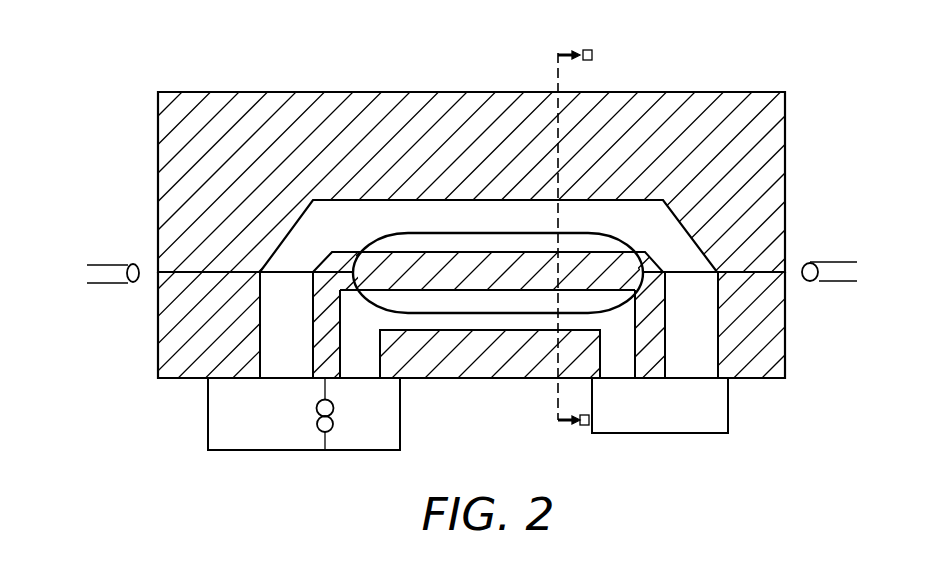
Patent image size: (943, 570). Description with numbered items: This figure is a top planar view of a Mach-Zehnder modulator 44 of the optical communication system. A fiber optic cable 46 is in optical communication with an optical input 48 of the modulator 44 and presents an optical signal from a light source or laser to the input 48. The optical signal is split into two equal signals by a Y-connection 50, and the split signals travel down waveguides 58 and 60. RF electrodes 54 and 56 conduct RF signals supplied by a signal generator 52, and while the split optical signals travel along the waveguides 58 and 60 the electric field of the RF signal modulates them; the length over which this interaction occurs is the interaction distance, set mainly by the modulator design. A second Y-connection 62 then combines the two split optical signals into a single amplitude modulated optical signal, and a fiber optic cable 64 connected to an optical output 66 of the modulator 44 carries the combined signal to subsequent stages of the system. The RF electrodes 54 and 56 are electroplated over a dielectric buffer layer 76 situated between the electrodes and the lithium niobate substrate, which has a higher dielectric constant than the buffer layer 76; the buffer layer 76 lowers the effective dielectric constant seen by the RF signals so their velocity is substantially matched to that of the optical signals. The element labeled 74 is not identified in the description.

The Mach-Zehnder modulator 44 is at (203, 49).
The fiber optic cable 46 is at (106, 254).
The optical input 48 is at (199, 325).
The Y-connection 50 is at (332, 241).
The signal generator 52 is at (468, 414).
The RF electrode 54 is at (471, 285).
The RF electrode 56 is at (492, 285).
The waveguide 58 is at (498, 183).
The waveguide 60 is at (555, 285).
The second Y-connection 62 is at (654, 240).
The fiber optic cable 64 is at (837, 292).
The optical output 66 is at (756, 292).
The upper mold half 74 is at (471, 162).
The dielectric buffer layer 76 is at (471, 346).